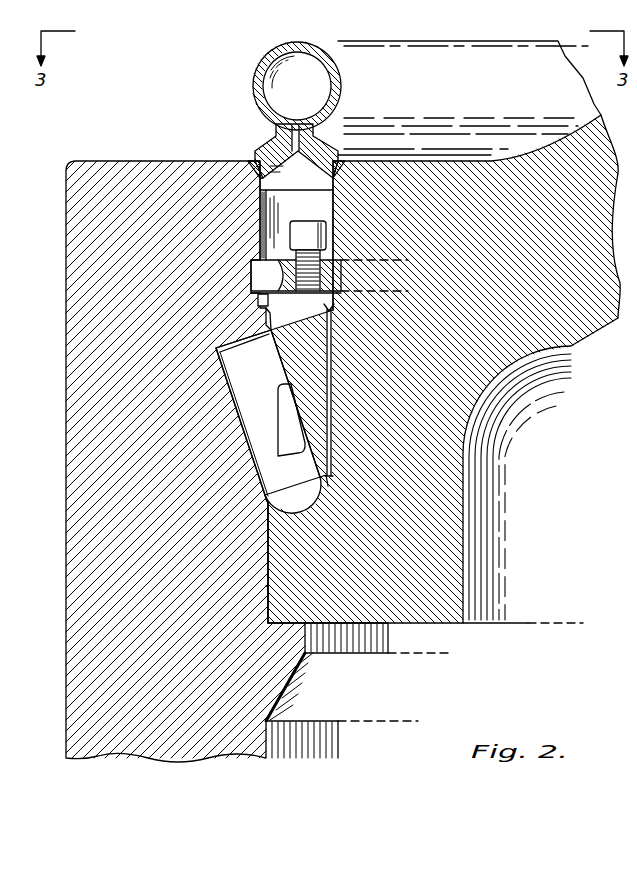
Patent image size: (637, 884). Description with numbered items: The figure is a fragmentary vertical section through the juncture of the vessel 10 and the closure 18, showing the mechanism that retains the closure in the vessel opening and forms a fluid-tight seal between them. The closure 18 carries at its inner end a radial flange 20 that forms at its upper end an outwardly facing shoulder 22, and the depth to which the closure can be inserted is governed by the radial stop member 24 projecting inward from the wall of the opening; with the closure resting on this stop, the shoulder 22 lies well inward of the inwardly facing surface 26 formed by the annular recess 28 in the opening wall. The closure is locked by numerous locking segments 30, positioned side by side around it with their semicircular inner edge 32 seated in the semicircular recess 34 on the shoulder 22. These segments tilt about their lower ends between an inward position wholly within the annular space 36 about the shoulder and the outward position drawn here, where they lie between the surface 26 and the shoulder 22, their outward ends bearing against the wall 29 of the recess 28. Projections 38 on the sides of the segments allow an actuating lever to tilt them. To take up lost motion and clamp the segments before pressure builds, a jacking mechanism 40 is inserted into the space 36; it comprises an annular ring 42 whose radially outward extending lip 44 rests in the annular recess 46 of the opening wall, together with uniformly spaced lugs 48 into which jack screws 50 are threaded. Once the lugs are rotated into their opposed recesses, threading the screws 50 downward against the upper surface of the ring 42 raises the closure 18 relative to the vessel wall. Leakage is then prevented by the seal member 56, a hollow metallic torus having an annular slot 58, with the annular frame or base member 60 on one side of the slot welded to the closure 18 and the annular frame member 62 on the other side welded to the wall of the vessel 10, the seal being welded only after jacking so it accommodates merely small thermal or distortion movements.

The vessel 10 is at (58, 497).
The closure 18 is at (560, 338).
The radial flange 20 is at (258, 541).
The outwardly facing shoulder 22 is at (322, 477).
The radial stop member 24 is at (302, 648).
The inwardly facing surface 26 is at (206, 345).
The annular recess 28 is at (210, 383).
The wall of annular recess 29 is at (228, 398).
The locking segments 30 is at (243, 415).
The semicircular inner edge 32 is at (283, 512).
The semicircular recess 34 is at (305, 492).
The annular space 36 is at (262, 203).
The projections 38 is at (292, 445).
The jacking mechanism 40 is at (338, 309).
The annular ring 42 is at (306, 368).
The radially outward extending lip 44 is at (250, 310).
The annular recess 46 is at (250, 295).
The lugs 48 is at (252, 270).
The jack screws 50 is at (321, 238).
The seal member 56 is at (243, 63).
The annular slot 58 is at (288, 118).
The annular frame or base member 60 is at (318, 156).
The annular frame member 62 is at (262, 132).